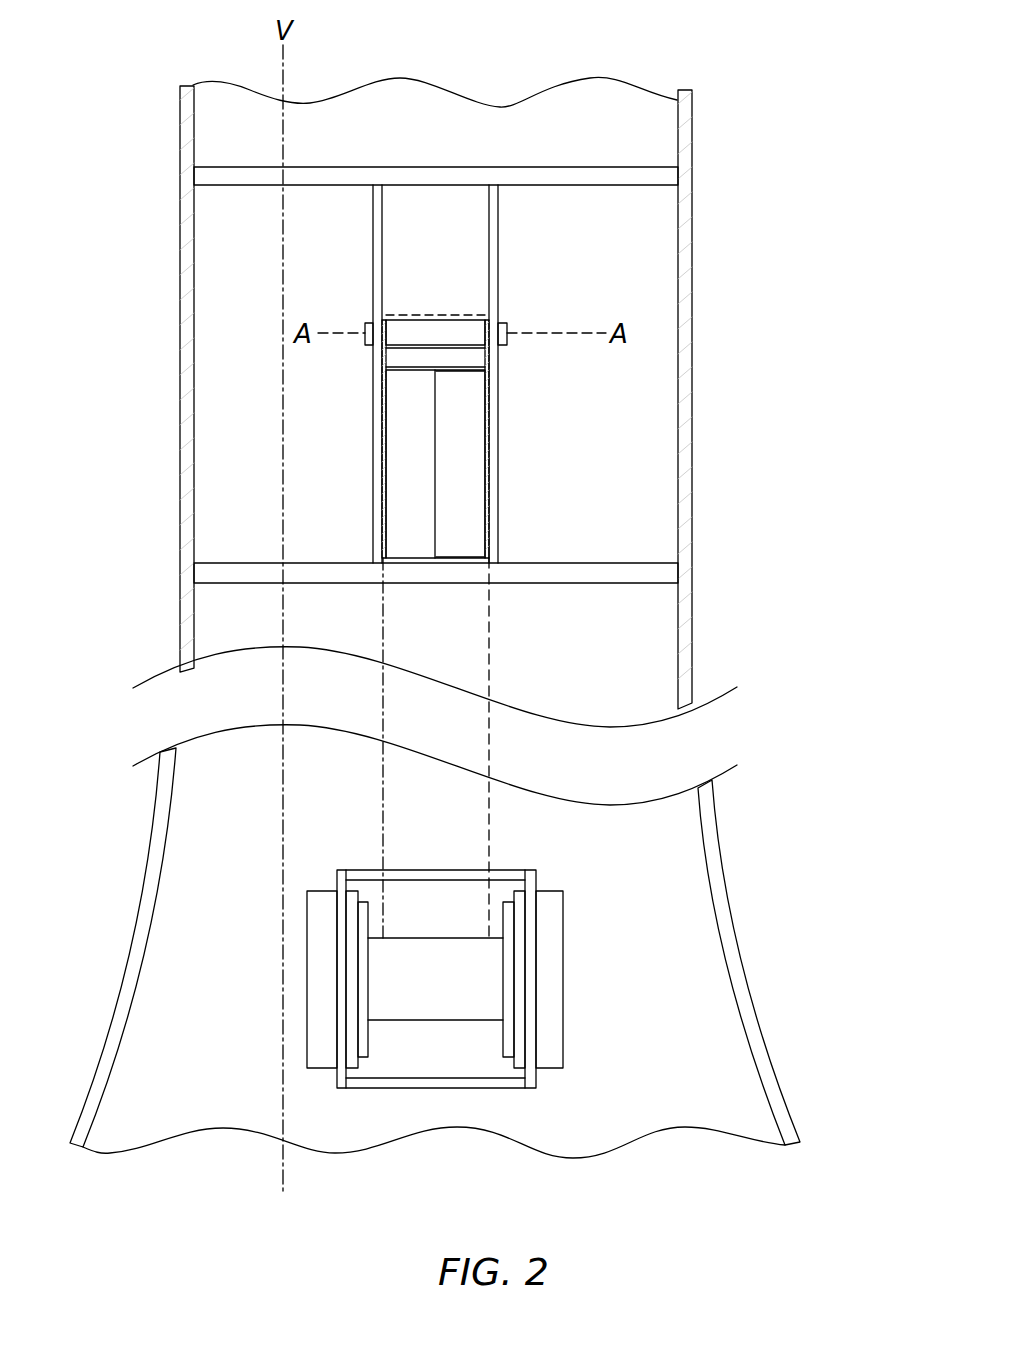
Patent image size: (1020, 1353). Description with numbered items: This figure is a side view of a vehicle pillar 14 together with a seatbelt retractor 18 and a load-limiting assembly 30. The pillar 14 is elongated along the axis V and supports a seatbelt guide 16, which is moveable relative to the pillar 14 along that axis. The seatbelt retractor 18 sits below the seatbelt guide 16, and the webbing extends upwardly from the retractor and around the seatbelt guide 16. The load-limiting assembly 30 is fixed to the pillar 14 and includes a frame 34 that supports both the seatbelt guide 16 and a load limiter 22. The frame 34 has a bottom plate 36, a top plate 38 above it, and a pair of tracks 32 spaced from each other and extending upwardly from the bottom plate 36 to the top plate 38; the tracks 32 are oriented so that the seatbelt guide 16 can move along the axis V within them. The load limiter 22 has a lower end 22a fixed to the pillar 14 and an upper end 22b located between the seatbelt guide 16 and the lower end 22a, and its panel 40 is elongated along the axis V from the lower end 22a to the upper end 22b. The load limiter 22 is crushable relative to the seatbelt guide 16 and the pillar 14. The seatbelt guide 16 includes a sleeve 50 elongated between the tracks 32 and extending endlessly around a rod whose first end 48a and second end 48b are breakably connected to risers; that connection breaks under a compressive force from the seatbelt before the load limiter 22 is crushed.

The pillar 14 is at (178, 280).
The seatbelt guide 16 is at (520, 344).
The seatbelt retractor 18 is at (490, 648).
The load limiter 22 is at (470, 468).
The lower end 22a is at (451, 548).
The upper end 22b is at (453, 386).
The load-limiting assembly 30 is at (614, 130).
The track 32 is at (372, 247).
The frame 34 is at (579, 142).
The bottom plate 36 is at (608, 584).
The top plate 38 is at (445, 167).
The panel 40 is at (456, 437).
The first end 48a is at (508, 331).
The second end 48b is at (364, 331).
The sleeve 50 is at (432, 330).